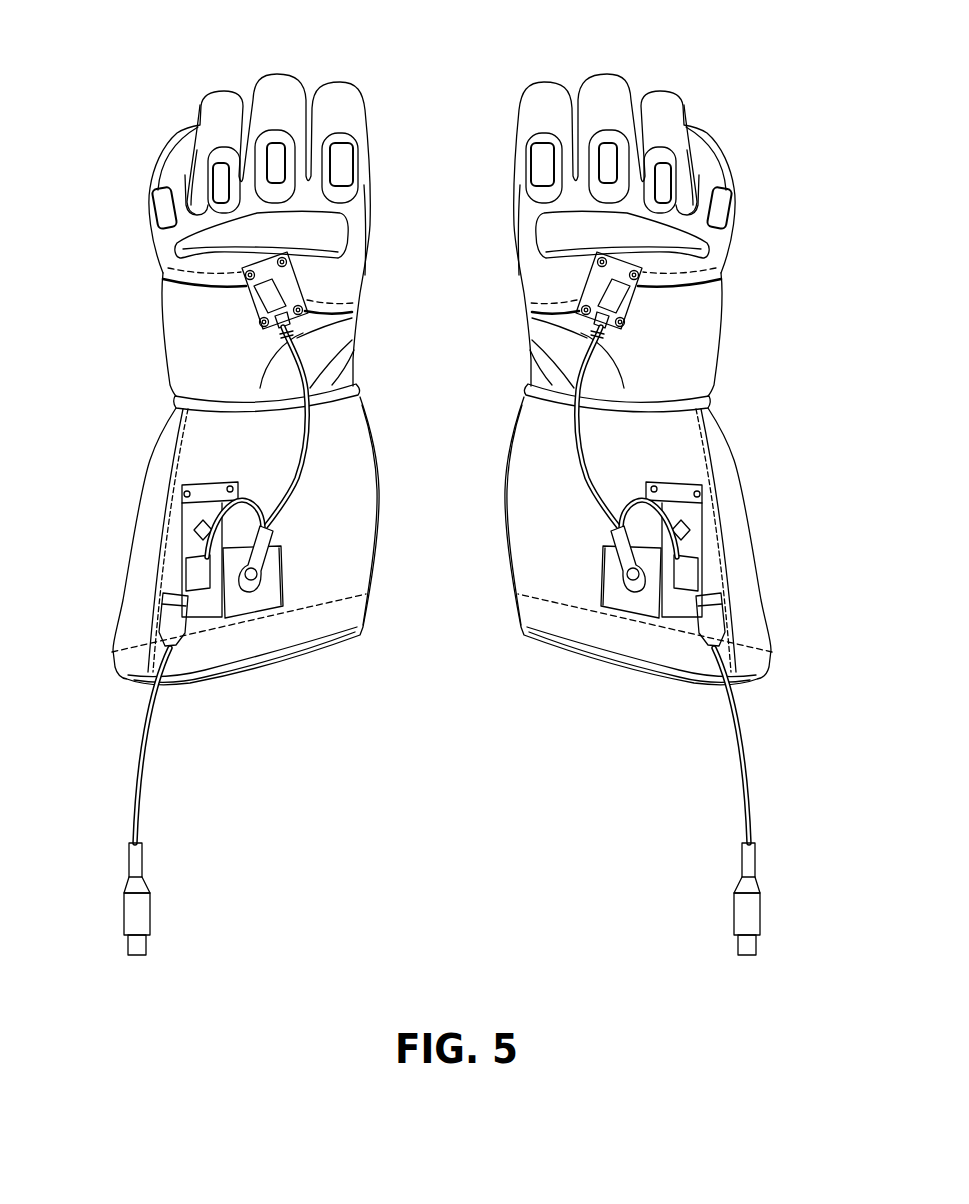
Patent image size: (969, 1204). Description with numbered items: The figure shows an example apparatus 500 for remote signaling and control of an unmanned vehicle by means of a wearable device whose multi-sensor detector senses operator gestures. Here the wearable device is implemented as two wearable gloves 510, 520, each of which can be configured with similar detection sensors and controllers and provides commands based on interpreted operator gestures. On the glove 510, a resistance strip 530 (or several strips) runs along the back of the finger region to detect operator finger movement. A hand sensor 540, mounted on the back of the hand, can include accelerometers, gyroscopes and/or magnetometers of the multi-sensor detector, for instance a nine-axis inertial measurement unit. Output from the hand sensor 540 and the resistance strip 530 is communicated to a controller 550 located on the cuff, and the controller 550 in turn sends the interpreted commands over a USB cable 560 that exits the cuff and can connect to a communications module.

The apparatus 500 is at (790, 59).
The wearable glove 510 is at (285, 75).
The wearable glove 520 is at (605, 75).
The resistance strip 530 is at (220, 182).
The hand sensor 540 is at (262, 318).
The controller 550 is at (197, 547).
The USB cable 560 is at (122, 912).